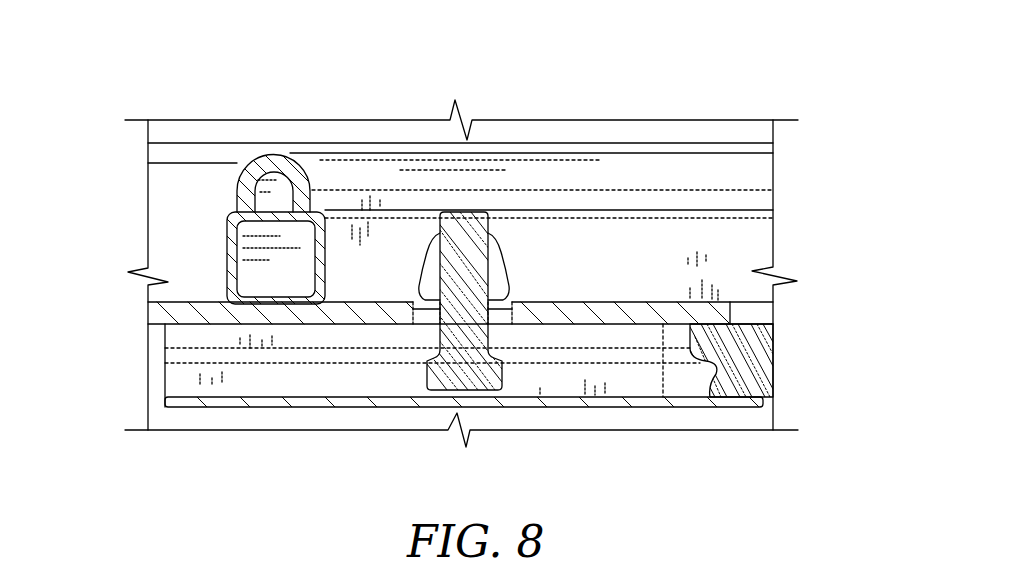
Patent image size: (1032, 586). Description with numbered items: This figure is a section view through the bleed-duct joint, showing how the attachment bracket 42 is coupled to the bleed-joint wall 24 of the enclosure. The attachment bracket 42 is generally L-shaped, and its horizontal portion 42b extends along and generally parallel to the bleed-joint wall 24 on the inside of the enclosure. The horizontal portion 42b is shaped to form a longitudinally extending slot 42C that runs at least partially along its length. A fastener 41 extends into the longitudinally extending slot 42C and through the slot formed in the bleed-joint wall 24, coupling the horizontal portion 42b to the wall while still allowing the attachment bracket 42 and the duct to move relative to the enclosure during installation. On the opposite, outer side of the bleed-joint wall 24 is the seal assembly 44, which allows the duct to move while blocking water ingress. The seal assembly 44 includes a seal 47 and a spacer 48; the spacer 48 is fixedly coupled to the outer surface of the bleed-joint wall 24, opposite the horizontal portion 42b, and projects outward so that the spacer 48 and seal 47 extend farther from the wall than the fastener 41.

The seal assembly 44 is at (116, 82).
The seal 47 is at (357, 178).
The spacer 48 is at (233, 258).
The bleed-joint wall 24 is at (157, 317).
The attachment bracket 42 is at (457, 415).
The longitudinally extending slot 42C is at (208, 372).
The horizontal portion 42b is at (278, 403).
The fastener 41 is at (484, 372).